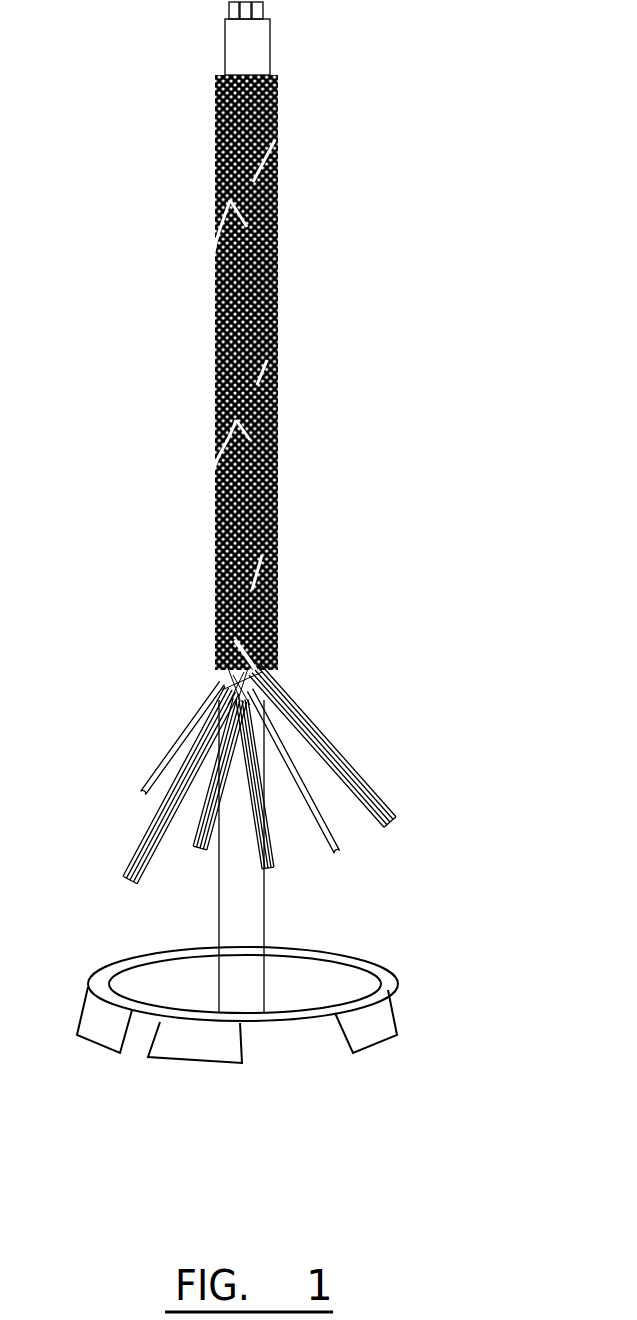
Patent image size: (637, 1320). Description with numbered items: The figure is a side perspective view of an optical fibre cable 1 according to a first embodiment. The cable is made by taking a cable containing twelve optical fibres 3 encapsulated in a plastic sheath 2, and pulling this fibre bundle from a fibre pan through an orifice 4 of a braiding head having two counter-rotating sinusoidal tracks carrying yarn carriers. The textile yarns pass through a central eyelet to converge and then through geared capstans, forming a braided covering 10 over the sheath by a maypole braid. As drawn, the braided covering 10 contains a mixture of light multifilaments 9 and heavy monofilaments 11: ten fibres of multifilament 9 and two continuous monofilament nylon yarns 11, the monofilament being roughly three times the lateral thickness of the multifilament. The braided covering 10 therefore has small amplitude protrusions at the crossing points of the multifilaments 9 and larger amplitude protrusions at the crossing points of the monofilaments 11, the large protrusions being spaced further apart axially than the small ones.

The optical fibre cable 1 is at (163, 335).
The plastic sheath 2 is at (237, 893).
The optical fibres 3 is at (227, 17).
The orifice 4 is at (372, 987).
The light multifilaments 9 is at (332, 745).
The braided covering 10 is at (214, 537).
The heavy monofilaments 11 is at (332, 837).